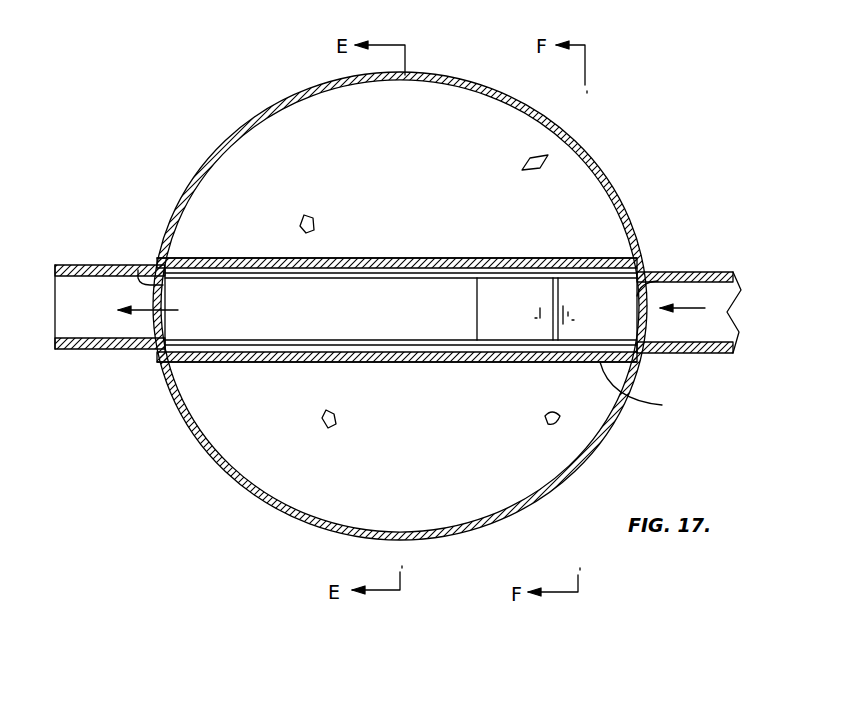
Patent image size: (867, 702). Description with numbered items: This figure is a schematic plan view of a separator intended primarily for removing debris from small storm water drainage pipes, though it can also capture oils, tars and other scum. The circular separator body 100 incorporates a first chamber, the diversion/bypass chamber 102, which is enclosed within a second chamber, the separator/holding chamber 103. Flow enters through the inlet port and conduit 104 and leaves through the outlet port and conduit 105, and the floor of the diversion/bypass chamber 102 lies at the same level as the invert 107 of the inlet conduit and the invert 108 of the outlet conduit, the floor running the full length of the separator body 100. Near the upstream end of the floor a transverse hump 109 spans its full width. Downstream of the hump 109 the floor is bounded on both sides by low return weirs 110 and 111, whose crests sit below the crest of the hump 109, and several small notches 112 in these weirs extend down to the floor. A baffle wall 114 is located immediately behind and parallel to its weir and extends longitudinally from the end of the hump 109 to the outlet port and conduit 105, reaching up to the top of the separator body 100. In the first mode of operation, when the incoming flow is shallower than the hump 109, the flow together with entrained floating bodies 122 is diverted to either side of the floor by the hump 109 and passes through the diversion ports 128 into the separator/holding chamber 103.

The separator body 100 is at (250, 98).
The diversion/bypass chamber 102 is at (329, 328).
The separator/holding chamber 103 is at (466, 145).
The inlet port and conduit 104 is at (706, 270).
The outlet port and conduit 105 is at (97, 265).
The invert of the inlet conduit 107 is at (660, 272).
The invert of the outlet conduit 108 is at (138, 270).
The transverse hump 109 is at (520, 324).
The return weir 110 is at (362, 258).
The return weir 111 is at (313, 362).
The notches 112 is at (255, 262).
The baffle wall 114 is at (437, 362).
The floating bodies 122 is at (305, 215).
The diversion ports 128 is at (583, 272).